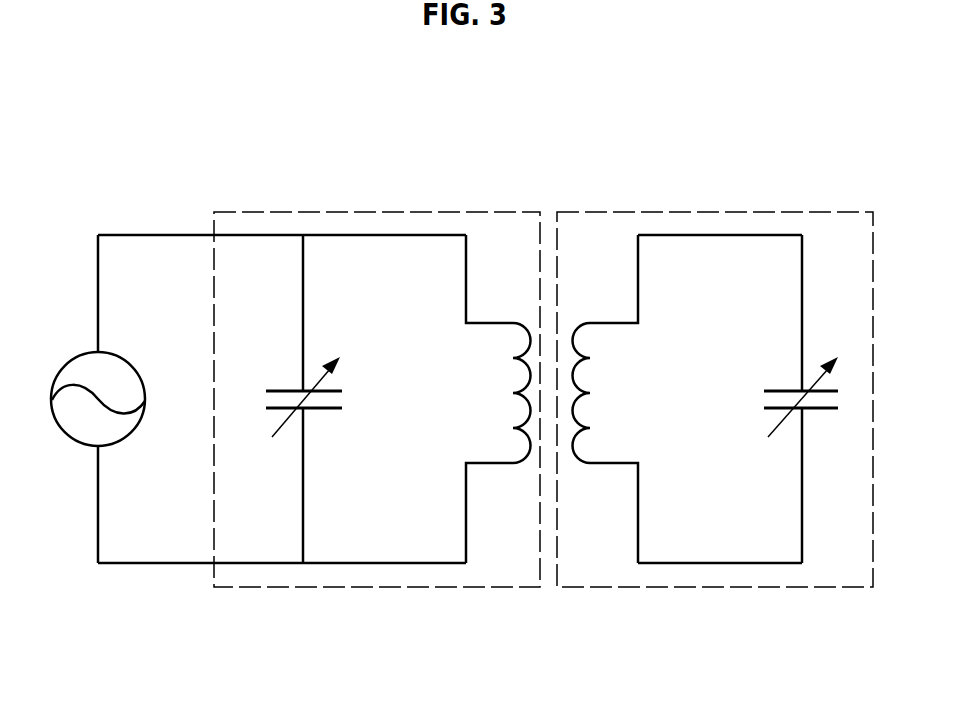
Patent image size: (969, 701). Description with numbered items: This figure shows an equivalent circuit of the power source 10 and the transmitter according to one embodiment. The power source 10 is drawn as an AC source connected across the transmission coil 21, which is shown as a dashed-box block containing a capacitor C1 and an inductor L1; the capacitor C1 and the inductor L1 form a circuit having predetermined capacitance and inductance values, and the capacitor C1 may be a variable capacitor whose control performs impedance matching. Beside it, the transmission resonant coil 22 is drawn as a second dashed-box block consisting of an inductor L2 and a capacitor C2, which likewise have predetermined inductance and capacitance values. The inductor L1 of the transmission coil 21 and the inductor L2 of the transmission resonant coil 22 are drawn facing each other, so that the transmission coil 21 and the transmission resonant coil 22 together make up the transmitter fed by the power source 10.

The power source 10 is at (67, 363).
The transmission coil 21 is at (377, 352).
The transmission resonant coil 22 is at (715, 354).
The capacitor C1 is at (285, 399).
The inductor L1 is at (497, 399).
The inductor L2 is at (608, 399).
The capacitor C2 is at (810, 399).